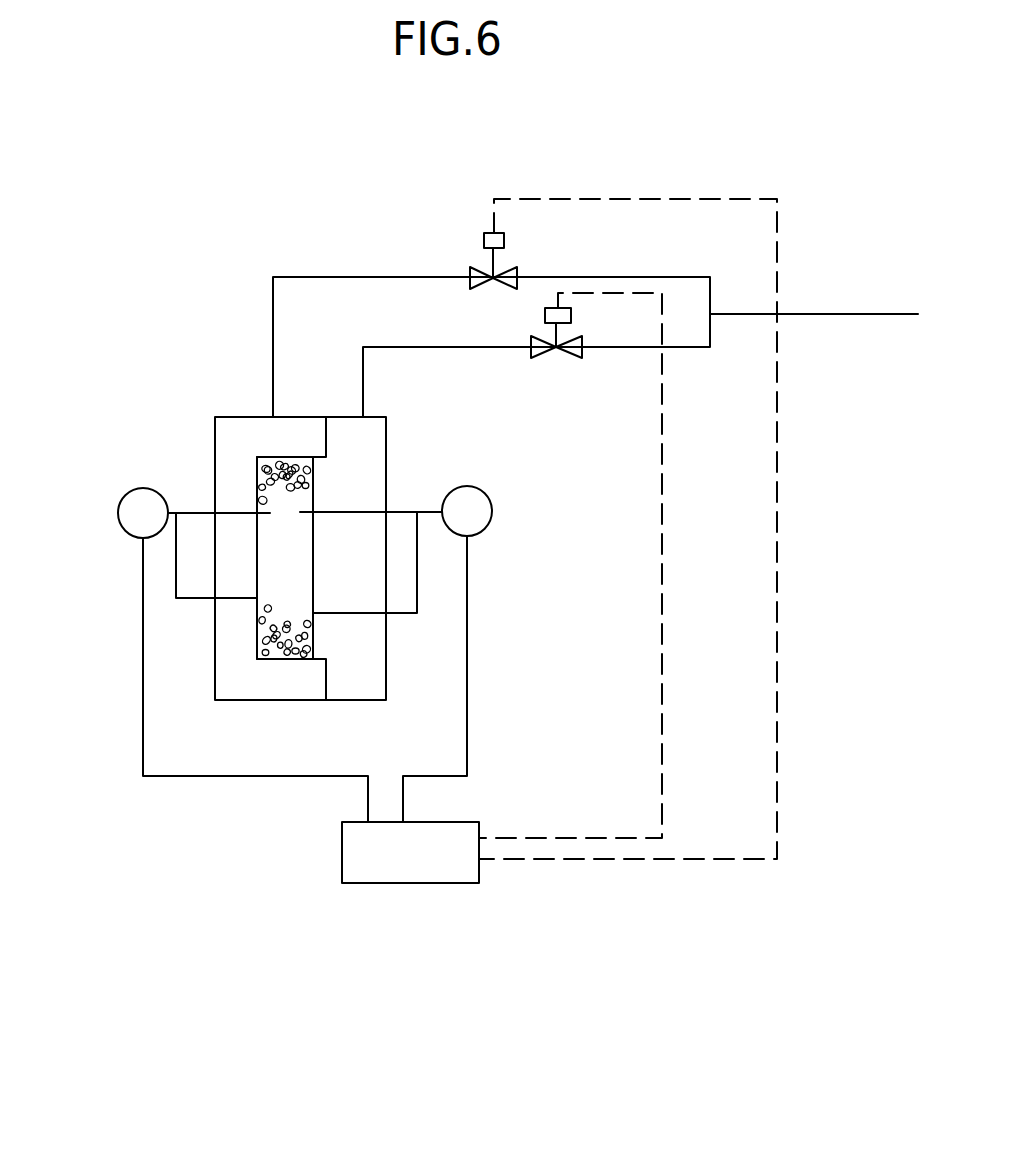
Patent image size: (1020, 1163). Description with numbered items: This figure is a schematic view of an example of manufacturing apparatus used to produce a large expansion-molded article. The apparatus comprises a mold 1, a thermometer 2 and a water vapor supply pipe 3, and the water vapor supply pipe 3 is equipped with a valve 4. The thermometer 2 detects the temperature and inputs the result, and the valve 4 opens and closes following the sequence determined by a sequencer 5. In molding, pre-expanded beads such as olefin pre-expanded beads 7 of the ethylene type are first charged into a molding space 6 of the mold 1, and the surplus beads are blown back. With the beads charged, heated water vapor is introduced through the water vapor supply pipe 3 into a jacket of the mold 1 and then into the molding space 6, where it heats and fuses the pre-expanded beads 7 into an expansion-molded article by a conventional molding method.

The mold 1 is at (228, 416).
The thermometer 2 is at (118, 520).
The water vapor supply pipe 3 is at (832, 316).
The valve 4 is at (484, 272).
The sequencer 5 is at (405, 866).
The molding space 6 is at (292, 551).
The olefin pre-expanded beads 7 is at (300, 633).